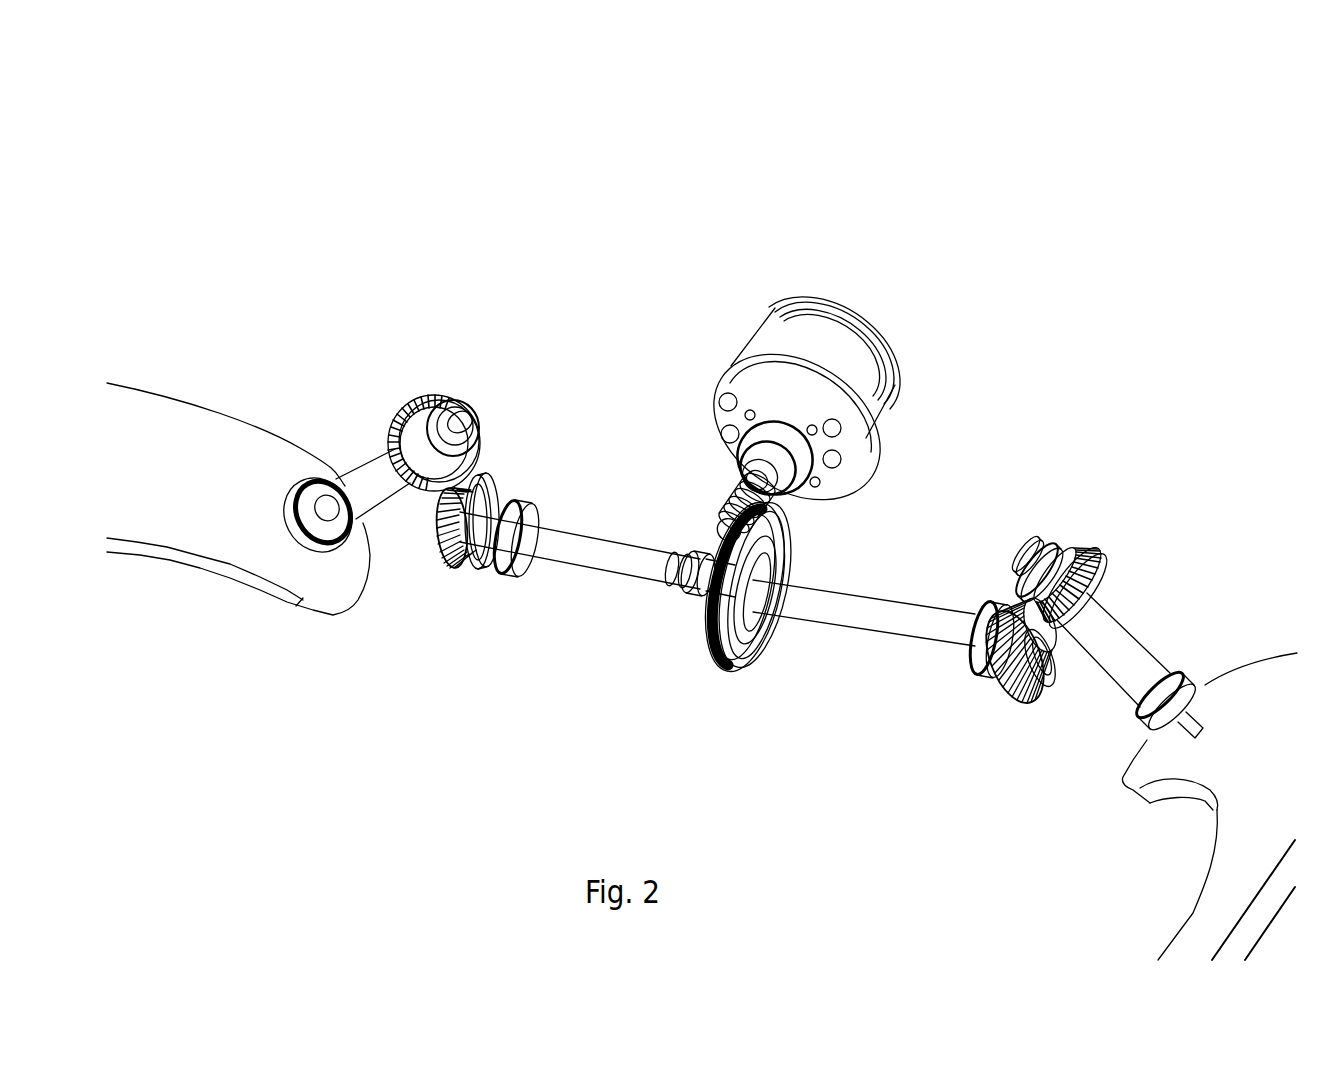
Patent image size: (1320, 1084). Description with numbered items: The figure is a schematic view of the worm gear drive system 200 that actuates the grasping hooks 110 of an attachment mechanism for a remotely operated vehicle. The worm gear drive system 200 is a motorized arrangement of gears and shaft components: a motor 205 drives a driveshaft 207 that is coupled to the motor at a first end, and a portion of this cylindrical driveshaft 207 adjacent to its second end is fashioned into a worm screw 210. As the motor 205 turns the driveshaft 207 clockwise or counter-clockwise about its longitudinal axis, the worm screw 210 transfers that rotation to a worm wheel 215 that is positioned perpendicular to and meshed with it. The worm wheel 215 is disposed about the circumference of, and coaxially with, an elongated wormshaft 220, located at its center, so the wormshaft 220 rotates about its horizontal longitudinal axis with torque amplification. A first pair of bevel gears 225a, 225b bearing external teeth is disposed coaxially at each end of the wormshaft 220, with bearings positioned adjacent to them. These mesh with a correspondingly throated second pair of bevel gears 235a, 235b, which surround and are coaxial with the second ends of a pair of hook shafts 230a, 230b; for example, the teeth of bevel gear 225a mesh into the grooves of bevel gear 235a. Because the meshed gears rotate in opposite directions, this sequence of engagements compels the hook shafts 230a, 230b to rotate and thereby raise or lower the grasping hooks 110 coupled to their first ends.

The worm gear drive system 200 is at (643, 143).
The grasping hooks 110 is at (142, 413).
The motor 205 is at (796, 348).
The driveshaft 207 is at (757, 477).
The worm screw 210 is at (752, 510).
The worm wheel 215 is at (710, 657).
The wormshaft 220 is at (576, 540).
The first bevel gear of first pair 225a is at (448, 555).
The second bevel gear of first pair 225b is at (1016, 660).
The first hook shaft 230a is at (358, 476).
The second hook shaft 230b is at (1137, 643).
The first bevel gear of second pair 235a is at (404, 423).
The second bevel gear of second pair 235b is at (1096, 558).